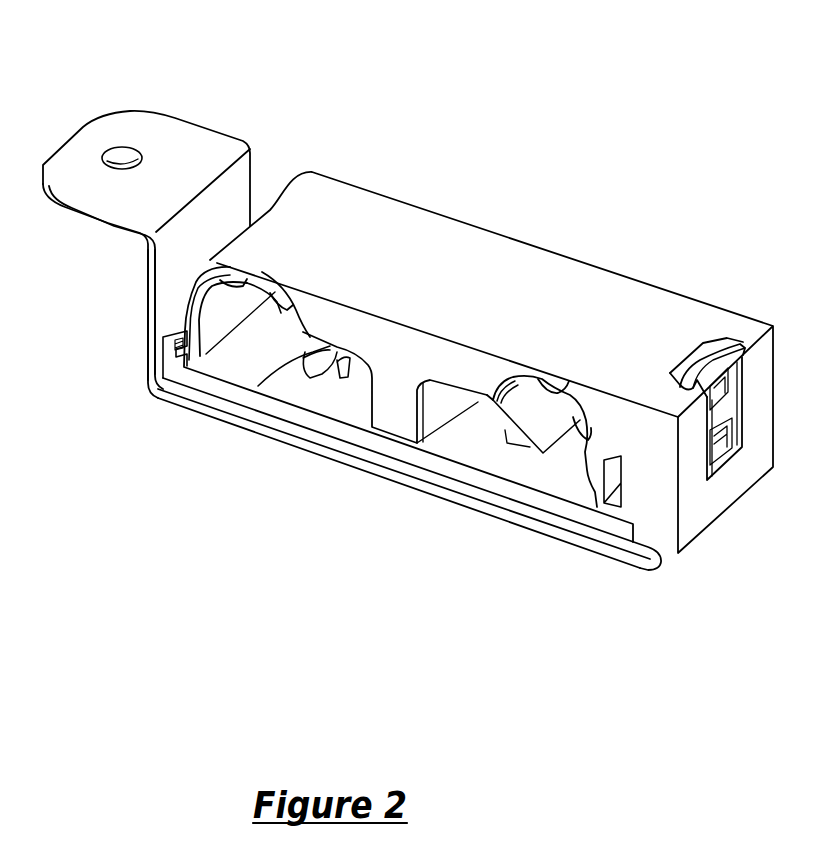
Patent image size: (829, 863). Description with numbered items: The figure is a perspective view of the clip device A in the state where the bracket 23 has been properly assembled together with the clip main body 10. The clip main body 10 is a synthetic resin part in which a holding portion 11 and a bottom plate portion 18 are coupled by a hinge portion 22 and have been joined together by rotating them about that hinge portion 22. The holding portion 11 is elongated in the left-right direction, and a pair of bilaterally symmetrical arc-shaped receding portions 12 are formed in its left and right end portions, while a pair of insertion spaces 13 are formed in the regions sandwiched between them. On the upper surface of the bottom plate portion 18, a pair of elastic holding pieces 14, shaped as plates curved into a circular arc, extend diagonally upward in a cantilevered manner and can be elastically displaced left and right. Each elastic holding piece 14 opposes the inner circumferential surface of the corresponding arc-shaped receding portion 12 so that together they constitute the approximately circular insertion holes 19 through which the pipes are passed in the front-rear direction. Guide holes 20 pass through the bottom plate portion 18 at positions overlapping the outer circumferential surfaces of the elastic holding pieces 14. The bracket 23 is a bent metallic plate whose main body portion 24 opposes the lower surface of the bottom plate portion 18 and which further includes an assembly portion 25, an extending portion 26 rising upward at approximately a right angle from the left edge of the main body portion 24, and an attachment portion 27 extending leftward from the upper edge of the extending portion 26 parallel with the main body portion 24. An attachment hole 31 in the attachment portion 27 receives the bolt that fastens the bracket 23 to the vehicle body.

The clip main body 10 is at (568, 170).
The holding portion 11 is at (478, 263).
The arc-shaped receding portion 12 is at (215, 268).
The insertion space 13 is at (368, 382).
The elastic holding piece 14 is at (262, 362).
The bottom plate portion 18 is at (312, 418).
The insertion hole 19 is at (285, 311).
The guide hole 20 is at (337, 380).
The hinge portion 22 is at (182, 342).
The bracket 23 is at (608, 575).
The main body portion 24 is at (481, 508).
The assembly portion 25 is at (704, 362).
The extending portion 26 is at (172, 252).
The attachment portion 27 is at (87, 157).
The attachment hole 31 is at (130, 156).
The clip device A is at (721, 80).